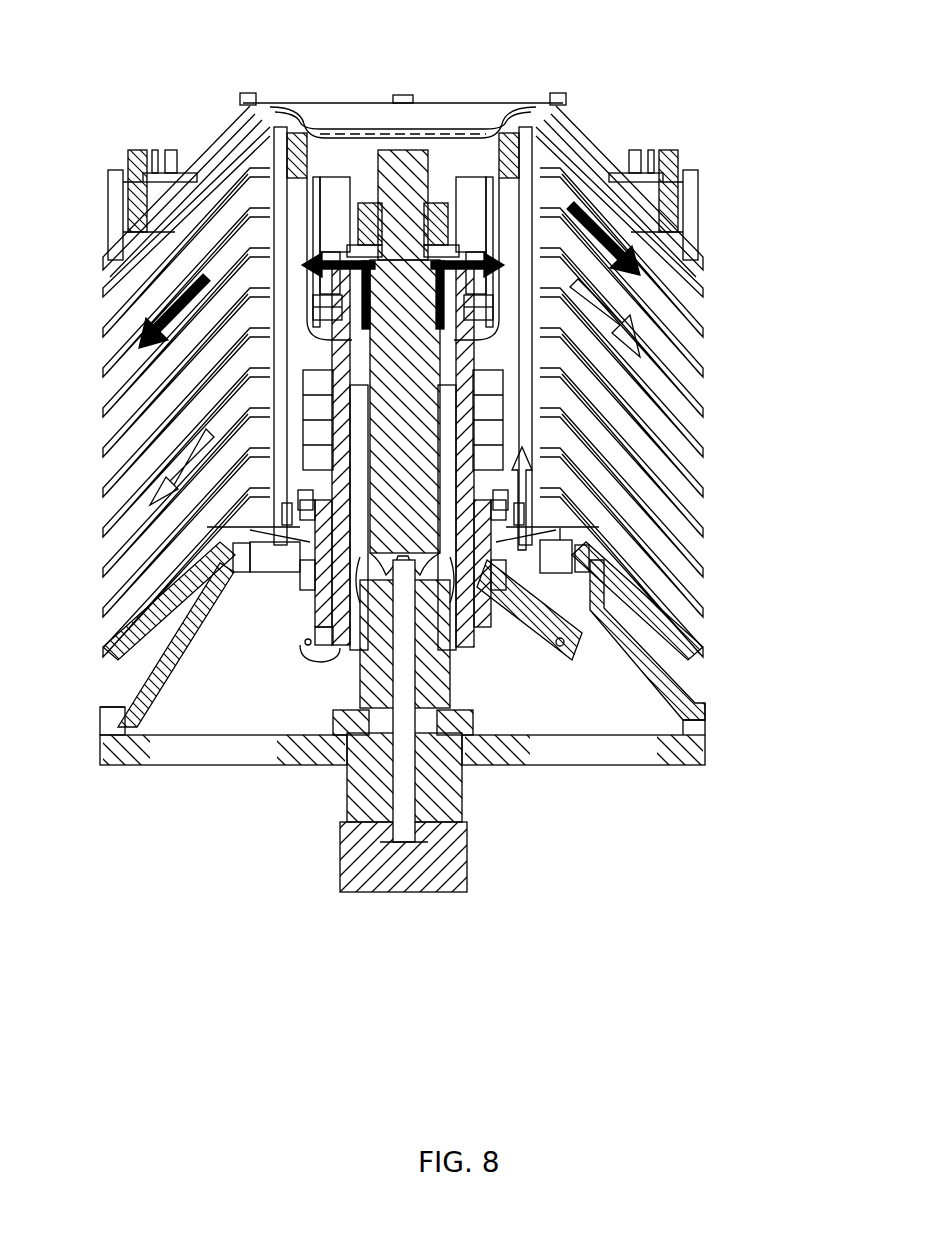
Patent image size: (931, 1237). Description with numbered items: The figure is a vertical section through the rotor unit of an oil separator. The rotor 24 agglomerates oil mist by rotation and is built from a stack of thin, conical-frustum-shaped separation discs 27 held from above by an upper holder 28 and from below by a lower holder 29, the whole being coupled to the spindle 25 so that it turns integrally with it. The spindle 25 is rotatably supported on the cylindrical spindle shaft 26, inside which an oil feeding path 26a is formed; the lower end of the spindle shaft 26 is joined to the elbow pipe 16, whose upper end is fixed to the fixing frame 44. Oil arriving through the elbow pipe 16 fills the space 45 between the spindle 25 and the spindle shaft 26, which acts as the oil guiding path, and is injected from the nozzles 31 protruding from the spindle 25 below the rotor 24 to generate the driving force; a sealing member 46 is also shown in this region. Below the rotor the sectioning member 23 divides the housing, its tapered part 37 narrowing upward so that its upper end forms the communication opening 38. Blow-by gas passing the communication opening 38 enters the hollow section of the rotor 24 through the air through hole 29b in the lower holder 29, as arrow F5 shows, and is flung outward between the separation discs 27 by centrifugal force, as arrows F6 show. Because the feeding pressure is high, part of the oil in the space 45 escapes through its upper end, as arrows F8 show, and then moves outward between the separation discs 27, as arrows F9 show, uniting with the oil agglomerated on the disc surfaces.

The elbow pipe 16 is at (457, 868).
The sectioning member 23 is at (402, 713).
The tapered part 37 is at (678, 692).
The communication opening 38 is at (600, 602).
The rotor 24 is at (585, 92).
The spindle 25 is at (347, 572).
The spindle shaft 26 is at (399, 474).
The oil feeding path 26a is at (397, 767).
The separation discs 27 is at (670, 357).
The upper holder 28 is at (615, 167).
The lower holder 29 is at (592, 545).
The air through hole 29b is at (560, 532).
The nozzle 31 is at (512, 645).
The fixing frame 44 is at (707, 750).
The space 45 is at (343, 572).
The sealing member 46 is at (432, 215).
The arrow F5 is at (530, 470).
The arrows F6 is at (172, 469).
The arrows F8 is at (362, 275).
The arrows F9 is at (172, 306).